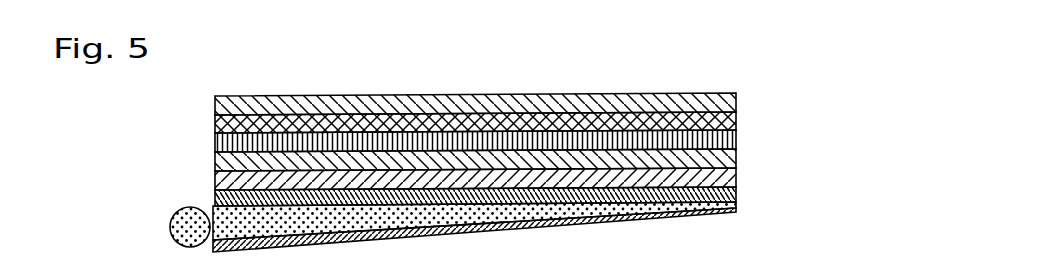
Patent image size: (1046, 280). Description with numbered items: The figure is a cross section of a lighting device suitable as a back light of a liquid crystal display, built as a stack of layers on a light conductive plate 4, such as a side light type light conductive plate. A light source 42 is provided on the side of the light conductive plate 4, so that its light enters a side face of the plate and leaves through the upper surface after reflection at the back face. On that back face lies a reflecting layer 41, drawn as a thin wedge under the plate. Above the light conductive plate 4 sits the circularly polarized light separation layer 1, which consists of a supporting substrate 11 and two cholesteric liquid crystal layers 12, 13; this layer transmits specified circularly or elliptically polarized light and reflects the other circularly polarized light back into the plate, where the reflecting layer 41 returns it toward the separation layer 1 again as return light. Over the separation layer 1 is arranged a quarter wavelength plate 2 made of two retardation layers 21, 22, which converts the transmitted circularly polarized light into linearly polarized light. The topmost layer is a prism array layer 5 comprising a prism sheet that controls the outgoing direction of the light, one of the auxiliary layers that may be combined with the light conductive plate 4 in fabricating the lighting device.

The circularly polarized light separation layer 1 is at (570, 176).
The supporting substrate 11 is at (522, 199).
The cholesteric liquid crystal layer 12 is at (737, 176).
The cholesteric liquid crystal layer 13 is at (737, 158).
The ¼ wavelength plate 2 is at (568, 122).
The retardation layer 21 is at (737, 138).
The retardation layer 22 is at (737, 118).
The light conductive plate 4 is at (270, 221).
The reflecting layer 41 is at (592, 224).
The light source 42 is at (188, 220).
The prism array layer 5 is at (214, 101).